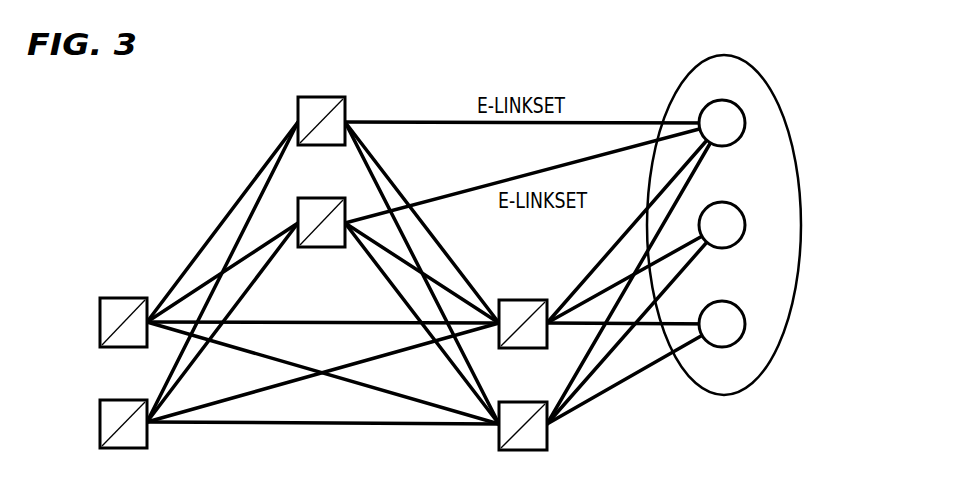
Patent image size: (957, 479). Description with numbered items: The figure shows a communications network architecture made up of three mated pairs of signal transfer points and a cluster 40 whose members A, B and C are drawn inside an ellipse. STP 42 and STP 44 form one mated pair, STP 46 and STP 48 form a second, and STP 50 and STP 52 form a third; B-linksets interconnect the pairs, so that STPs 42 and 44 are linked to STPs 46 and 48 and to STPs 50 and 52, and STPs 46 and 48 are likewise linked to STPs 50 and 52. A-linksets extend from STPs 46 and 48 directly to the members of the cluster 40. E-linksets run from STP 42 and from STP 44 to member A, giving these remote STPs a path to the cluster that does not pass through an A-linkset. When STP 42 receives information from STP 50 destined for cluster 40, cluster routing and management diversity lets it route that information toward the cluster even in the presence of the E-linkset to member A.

The cluster 40 is at (778, 100).
The signal transfer point 42 is at (298, 114).
The signal transfer point 44 is at (328, 247).
The signal transfer point 46 is at (527, 300).
The signal transfer point 48 is at (527, 402).
The signal transfer point 50 is at (100, 312).
The signal transfer point 52 is at (100, 415).